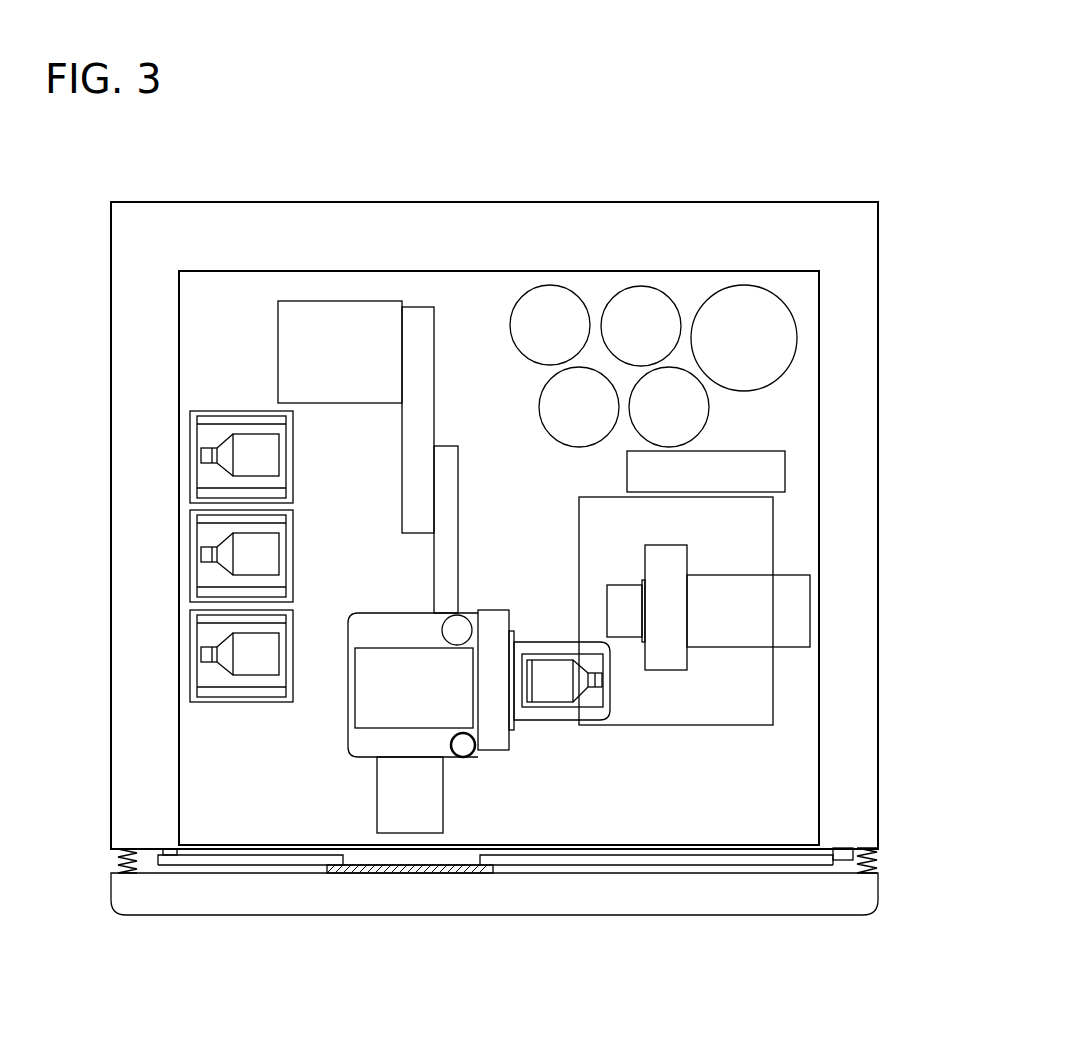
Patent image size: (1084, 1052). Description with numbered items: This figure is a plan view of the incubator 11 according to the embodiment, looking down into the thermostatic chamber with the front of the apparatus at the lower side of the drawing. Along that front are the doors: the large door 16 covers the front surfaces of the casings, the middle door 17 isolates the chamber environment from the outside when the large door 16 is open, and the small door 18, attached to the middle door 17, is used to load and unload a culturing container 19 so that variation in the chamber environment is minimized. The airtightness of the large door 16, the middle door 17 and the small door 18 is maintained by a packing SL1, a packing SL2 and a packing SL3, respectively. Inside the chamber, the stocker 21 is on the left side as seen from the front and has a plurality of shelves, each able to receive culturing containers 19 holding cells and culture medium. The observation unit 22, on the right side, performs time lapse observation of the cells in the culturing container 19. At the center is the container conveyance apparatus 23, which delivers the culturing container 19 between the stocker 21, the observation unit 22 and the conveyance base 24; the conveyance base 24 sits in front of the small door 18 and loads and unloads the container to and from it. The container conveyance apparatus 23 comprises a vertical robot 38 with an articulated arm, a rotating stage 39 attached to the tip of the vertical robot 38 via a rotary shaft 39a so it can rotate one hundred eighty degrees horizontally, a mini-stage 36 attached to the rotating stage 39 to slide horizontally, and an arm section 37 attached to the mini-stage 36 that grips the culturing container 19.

The incubator 11 is at (557, 184).
The large door 16 is at (281, 916).
The middle door 17 is at (665, 866).
The small door 18 is at (385, 874).
The culturing container 19 is at (548, 702).
The stocker 21 is at (228, 411).
The observation unit 22 is at (774, 683).
The container conveyance apparatus 23 is at (472, 467).
The conveyance base 24 is at (377, 797).
The mini-stage 36 is at (350, 706).
The arm section 37 is at (543, 642).
The vertical robot 38 is at (348, 301).
The rotating stage 39 is at (378, 613).
The rotary shaft 39a is at (470, 614).
The packing SL1 is at (116, 858).
The packing SL2 is at (150, 850).
The packing SL3 is at (494, 875).